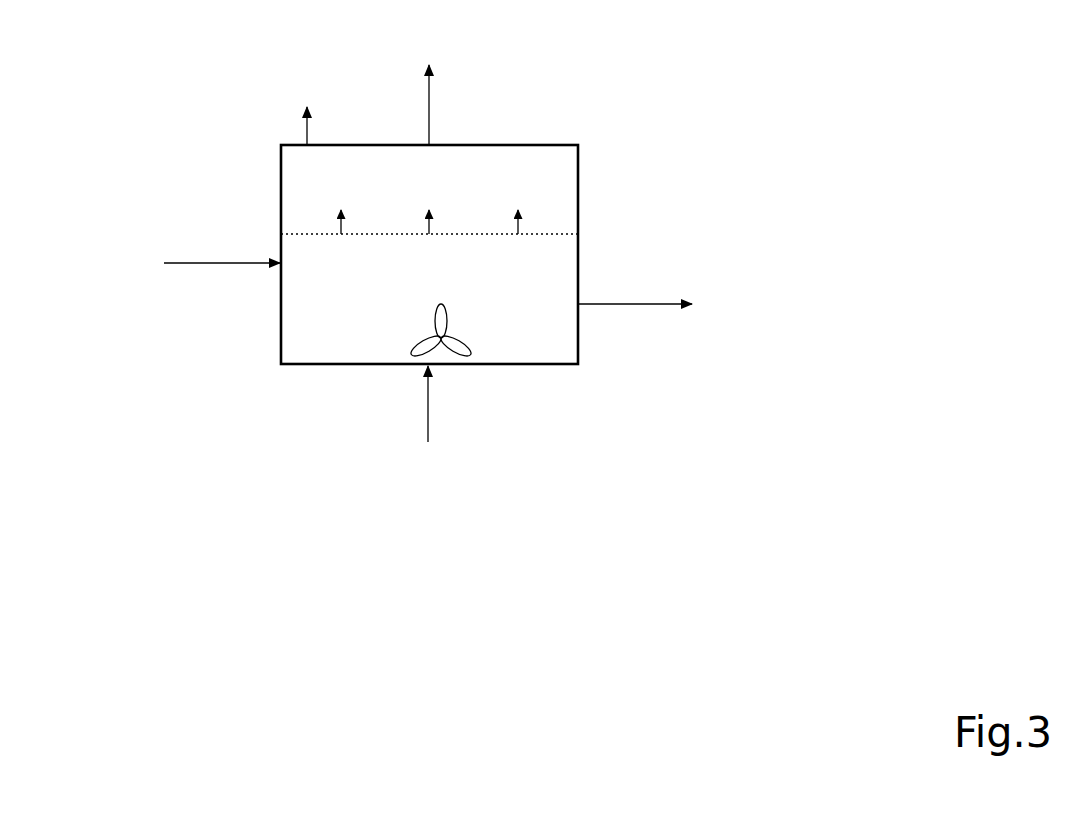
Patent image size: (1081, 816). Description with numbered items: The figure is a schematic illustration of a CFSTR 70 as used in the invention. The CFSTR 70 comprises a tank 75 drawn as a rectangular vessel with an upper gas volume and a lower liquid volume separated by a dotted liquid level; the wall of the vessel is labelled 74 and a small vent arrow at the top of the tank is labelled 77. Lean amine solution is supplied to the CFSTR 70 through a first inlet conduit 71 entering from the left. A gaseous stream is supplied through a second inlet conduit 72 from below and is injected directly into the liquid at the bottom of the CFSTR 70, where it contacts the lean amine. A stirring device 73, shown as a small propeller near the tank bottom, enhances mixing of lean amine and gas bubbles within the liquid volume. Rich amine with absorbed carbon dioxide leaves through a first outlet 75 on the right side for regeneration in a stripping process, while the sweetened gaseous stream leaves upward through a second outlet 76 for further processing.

The CFSTR 70 is at (432, 237).
The first inlet conduit 71 is at (262, 262).
The second inlet conduit 72 is at (427, 370).
The stirring device 73 is at (415, 346).
The vessel wall 74 is at (579, 193).
The first outlet 75 is at (580, 300).
The second outlet 76 is at (430, 145).
The vent outlet 77 is at (305, 145).